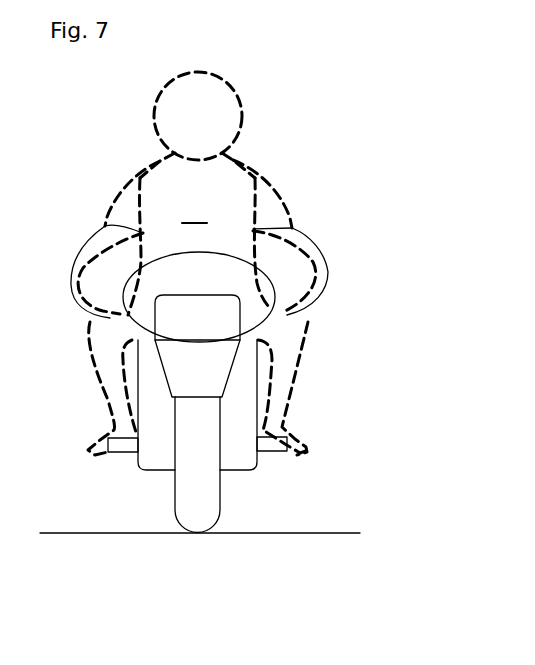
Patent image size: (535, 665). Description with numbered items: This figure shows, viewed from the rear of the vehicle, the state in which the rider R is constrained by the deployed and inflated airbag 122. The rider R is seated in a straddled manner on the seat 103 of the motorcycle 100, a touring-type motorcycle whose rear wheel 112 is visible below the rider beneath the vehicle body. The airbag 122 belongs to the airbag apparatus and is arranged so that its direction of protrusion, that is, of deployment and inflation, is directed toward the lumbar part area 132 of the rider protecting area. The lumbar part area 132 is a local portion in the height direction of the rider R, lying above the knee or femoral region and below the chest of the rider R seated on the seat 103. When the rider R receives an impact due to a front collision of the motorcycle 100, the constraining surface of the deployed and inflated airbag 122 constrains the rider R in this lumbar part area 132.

The motorcycle 100 is at (90, 178).
The airbag 122 is at (82, 238).
The lumbar part area 132 is at (300, 248).
The seat 103 is at (140, 308).
The rear wheel 112 is at (196, 514).
The rider R is at (225, 185).